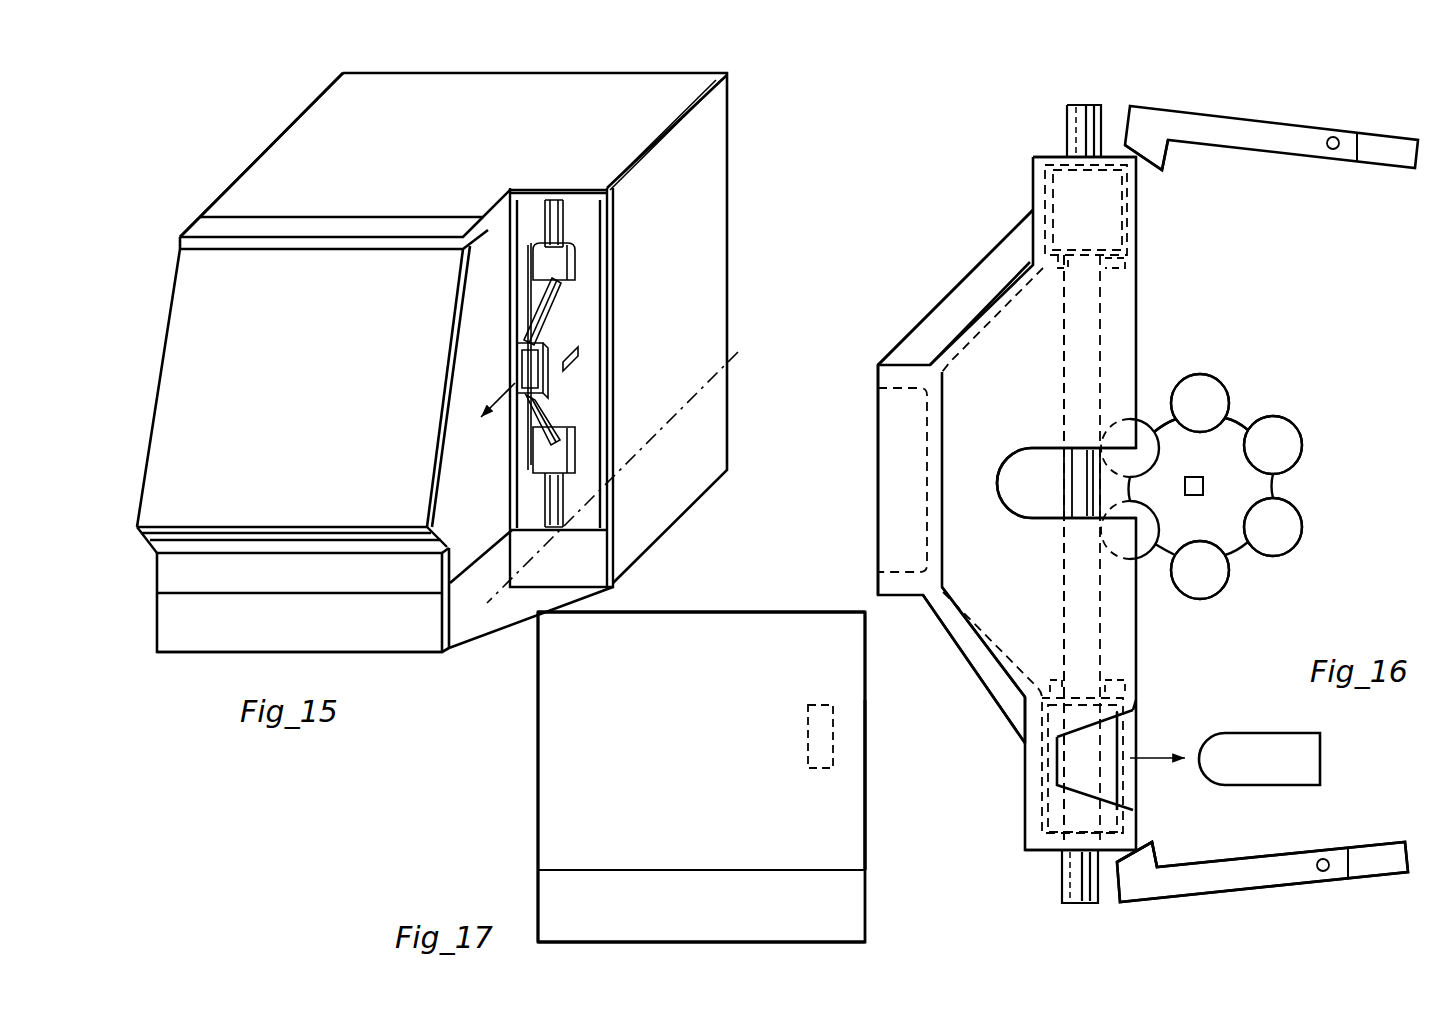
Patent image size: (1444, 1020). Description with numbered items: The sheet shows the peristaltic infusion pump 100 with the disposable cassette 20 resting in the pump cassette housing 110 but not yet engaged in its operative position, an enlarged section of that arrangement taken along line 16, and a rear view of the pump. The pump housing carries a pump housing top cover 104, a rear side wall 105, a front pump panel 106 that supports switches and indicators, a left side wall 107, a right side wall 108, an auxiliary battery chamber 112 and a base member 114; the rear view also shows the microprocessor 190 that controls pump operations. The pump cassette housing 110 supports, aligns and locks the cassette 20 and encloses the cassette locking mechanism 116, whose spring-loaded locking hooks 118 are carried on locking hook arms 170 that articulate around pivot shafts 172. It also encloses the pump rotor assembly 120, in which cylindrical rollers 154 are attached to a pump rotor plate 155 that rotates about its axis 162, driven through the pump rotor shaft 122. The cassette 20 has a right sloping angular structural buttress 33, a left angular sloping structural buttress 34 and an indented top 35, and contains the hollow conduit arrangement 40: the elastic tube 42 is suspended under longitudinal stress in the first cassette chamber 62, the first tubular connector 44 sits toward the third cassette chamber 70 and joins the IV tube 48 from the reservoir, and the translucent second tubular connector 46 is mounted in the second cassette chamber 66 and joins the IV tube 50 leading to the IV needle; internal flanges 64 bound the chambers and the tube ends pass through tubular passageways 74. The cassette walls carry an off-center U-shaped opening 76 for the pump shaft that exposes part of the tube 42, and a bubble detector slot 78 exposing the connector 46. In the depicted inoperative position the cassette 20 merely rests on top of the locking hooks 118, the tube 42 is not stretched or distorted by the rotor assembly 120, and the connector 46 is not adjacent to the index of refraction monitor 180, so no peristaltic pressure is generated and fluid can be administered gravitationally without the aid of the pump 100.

In FIG. 15, the peristaltic infusion pump 100 is at (516, 67).
In FIG. 17, the peristaltic infusion pump 100 is at (742, 605).
In FIG. 15, the pump housing top cover 104 is at (270, 158).
In FIG. 17, the pump housing top cover 104 is at (664, 611).
In FIG. 17, the rear side wall 105 is at (800, 616).
In FIG. 15, the front pump panel 106 is at (165, 355).
In FIG. 17, the left side wall 107 is at (866, 766).
In FIG. 17, the right side wall 108 is at (538, 800).
In FIG. 15, the pump cassette housing 110 is at (592, 249).
In FIG. 15, the auxiliary battery chamber 112 is at (158, 628).
In FIG. 17, the auxiliary battery chamber 112 is at (860, 904).
In FIG. 15, the base member 114 is at (255, 652).
In FIG. 17, the base member 114 is at (768, 944).
In FIG. 17, the microprocessor 190 is at (818, 742).
In FIG. 15, the section line 16 is at (745, 322).
In FIG. 15, the disposable cassette 20 is at (563, 386).
In FIG. 16, the disposable cassette 20 is at (868, 483).
In FIG. 16, the right sloping angular structural buttress 33 is at (965, 682).
In FIG. 16, the left angular sloping structural buttress 34 is at (965, 286).
In FIG. 16, the indented top 35 is at (880, 515).
In FIG. 16, the conduit arrangement 40 is at (1060, 556).
In FIG. 16, the elastic tube 42 is at (1065, 484).
In FIG. 16, the first tubular connector 44 is at (1095, 217).
In FIG. 16, the second tubular connector 46 is at (1090, 768).
In FIG. 16, the IV tube 48 is at (1083, 103).
In FIG. 16, the IV tube 50 is at (1060, 898).
In FIG. 16, the first cassette chamber 62 is at (1018, 374).
In FIG. 16, the internal flanges 64 is at (1052, 262).
In FIG. 16, the second cassette chamber 66 is at (1045, 852).
In FIG. 16, the third cassette chamber 70 is at (1045, 168).
In FIG. 16, the tubular passageways 74 is at (1068, 318).
In FIG. 16, the U-shaped opening 76 is at (1125, 484).
In FIG. 16, the bubble detector slot 78 is at (1124, 722).
In FIG. 16, the cassette locking mechanism 116 is at (1110, 905).
In FIG. 16, the locking hooks 118 is at (1172, 165).
In FIG. 16, the pump rotor assembly 120 is at (1282, 487).
In FIG. 16, the pump rotor shaft 122 is at (1192, 497).
In FIG. 16, the cylindrical rollers 154 is at (1215, 412).
In FIG. 16, the pump rotor plate 155 is at (1218, 459).
In FIG. 16, the axis 162 is at (1203, 486).
In FIG. 16, the locking hook arms 170 is at (1230, 118).
In FIG. 16, the pivot shafts 172 is at (1335, 138).
In FIG. 16, the index of refraction monitor 180 is at (1262, 733).